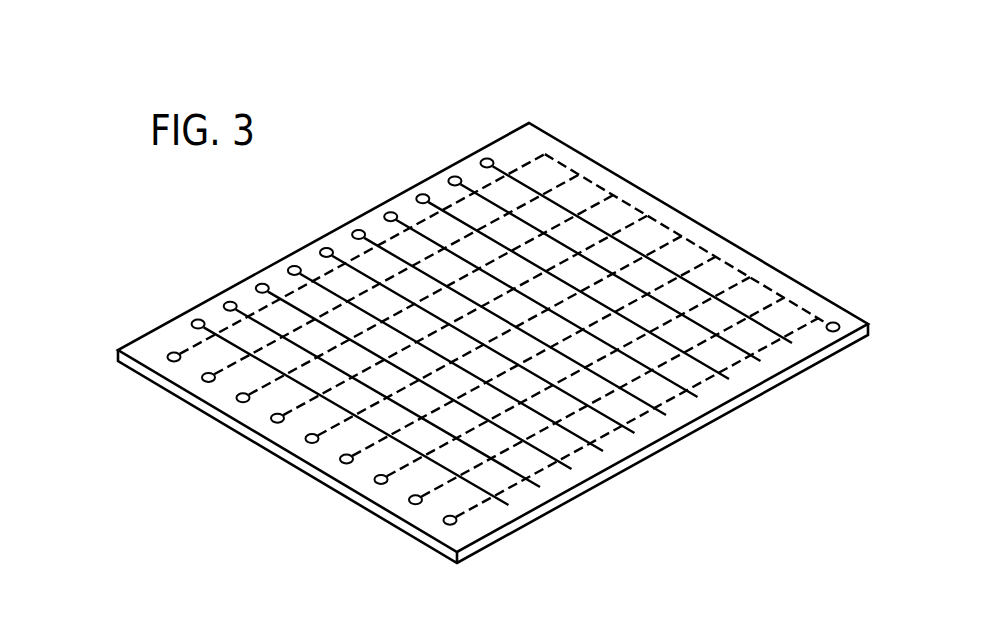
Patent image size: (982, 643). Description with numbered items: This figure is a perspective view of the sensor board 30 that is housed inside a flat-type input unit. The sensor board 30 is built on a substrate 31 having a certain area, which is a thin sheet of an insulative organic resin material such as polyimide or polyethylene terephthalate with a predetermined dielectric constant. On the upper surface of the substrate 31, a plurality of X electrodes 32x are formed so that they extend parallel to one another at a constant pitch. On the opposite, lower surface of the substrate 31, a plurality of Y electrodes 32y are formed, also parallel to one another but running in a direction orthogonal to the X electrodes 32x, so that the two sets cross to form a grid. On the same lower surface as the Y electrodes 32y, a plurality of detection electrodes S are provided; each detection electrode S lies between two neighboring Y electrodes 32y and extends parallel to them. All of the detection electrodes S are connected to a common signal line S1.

The sensor board 30 is at (569, 123).
The substrate 31 is at (520, 148).
The X electrodes 32x is at (731, 382).
The Y electrodes 32y is at (241, 398).
The detection electrodes S is at (644, 233).
The common signal line S1 is at (812, 292).